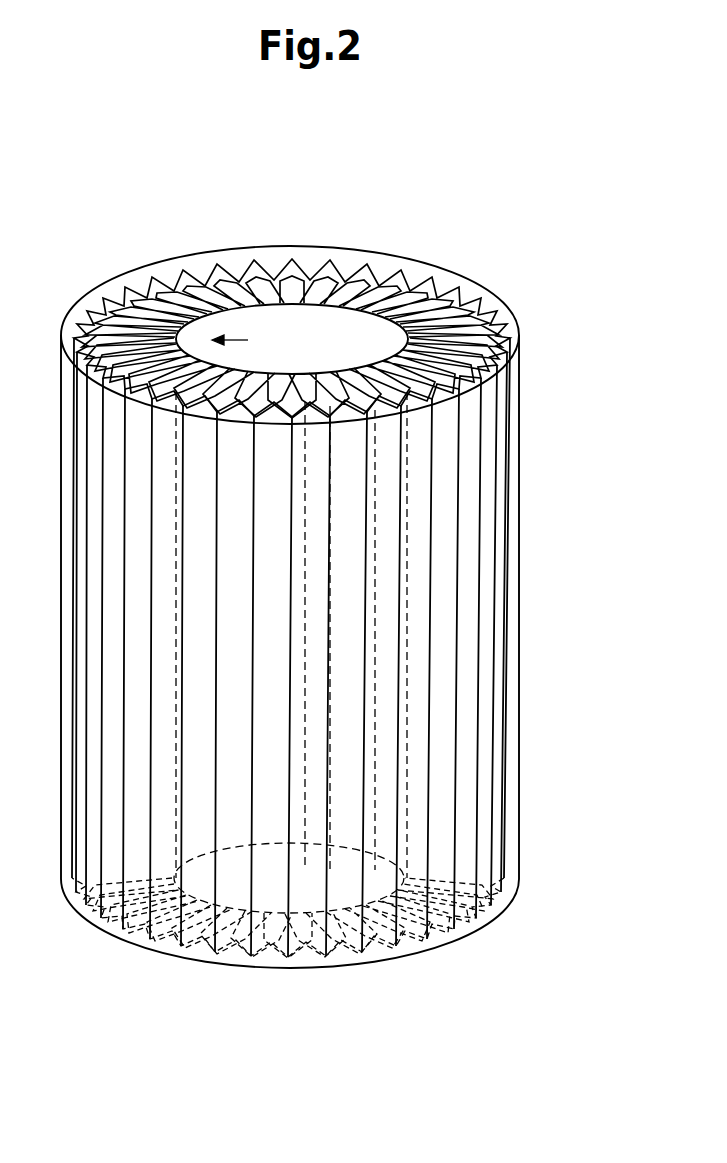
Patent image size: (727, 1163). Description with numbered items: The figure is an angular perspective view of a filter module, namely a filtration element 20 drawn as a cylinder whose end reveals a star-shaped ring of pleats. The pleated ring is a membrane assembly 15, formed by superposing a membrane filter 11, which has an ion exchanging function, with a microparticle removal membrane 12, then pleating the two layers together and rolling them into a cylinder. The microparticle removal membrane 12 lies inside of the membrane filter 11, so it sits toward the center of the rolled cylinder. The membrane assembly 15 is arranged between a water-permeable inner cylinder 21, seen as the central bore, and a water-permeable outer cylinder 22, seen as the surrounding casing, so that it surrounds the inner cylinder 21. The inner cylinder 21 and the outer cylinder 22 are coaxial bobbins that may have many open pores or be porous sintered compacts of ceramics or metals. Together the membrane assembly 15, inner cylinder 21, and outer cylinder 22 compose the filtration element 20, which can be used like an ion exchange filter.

The filtration element 20 is at (89, 264).
The membrane filter 11 is at (396, 268).
The membrane assembly 15 is at (416, 274).
The outer cylinder 22 is at (519, 322).
The inner cylinder 21 is at (248, 340).
The microparticle removal membrane 12 is at (346, 300).